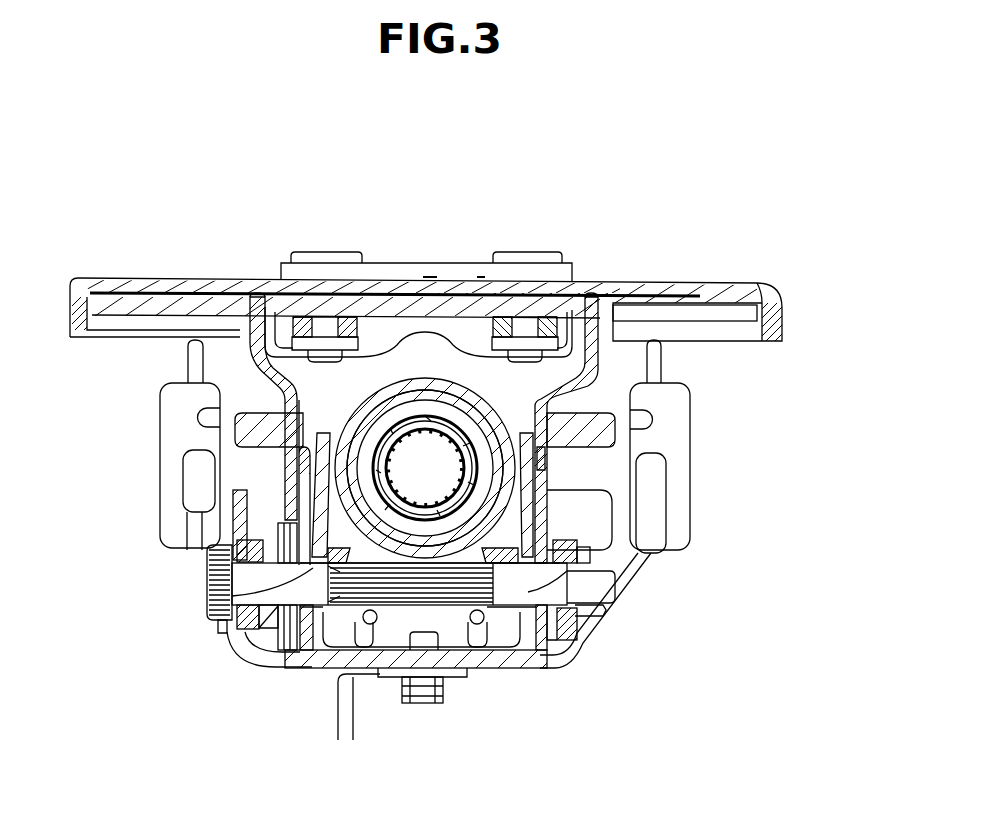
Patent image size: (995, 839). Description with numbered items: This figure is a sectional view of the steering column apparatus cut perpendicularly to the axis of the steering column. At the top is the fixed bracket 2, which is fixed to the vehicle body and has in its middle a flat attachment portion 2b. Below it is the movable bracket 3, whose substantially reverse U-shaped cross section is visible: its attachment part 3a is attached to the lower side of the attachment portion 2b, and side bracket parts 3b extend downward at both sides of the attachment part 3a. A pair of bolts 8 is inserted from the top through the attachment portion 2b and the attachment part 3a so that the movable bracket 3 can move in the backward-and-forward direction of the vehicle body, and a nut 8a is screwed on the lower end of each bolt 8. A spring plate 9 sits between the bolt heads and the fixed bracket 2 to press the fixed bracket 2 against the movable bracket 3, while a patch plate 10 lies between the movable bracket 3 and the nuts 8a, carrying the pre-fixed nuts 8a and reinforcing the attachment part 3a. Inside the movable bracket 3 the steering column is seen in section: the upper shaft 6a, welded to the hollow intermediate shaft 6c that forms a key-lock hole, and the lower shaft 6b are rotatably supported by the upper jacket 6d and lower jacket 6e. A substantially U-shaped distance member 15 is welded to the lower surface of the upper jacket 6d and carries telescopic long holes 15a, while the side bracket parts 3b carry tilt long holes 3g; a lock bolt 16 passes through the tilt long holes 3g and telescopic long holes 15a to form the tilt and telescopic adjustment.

The fixed bracket 2 is at (778, 301).
The attachment portion 2b is at (362, 289).
The movable bracket 3 is at (606, 357).
The attachment part 3a is at (340, 292).
The side bracket parts 3b is at (297, 449).
The tilt long holes 3g is at (305, 640).
The upper shaft 6a is at (443, 320).
The lower shaft 6b is at (424, 418).
The intermediate shaft 6c is at (426, 466).
The upper jacket 6d is at (471, 392).
The lower jacket 6e is at (455, 418).
The bolts 8 is at (313, 251).
The nut 8a is at (300, 340).
The spring plate 9 is at (395, 264).
The patch plate 10 is at (287, 308).
The distance member 15 is at (478, 666).
The telescopic long holes 15a is at (238, 595).
The lock bolt 16 is at (207, 575).